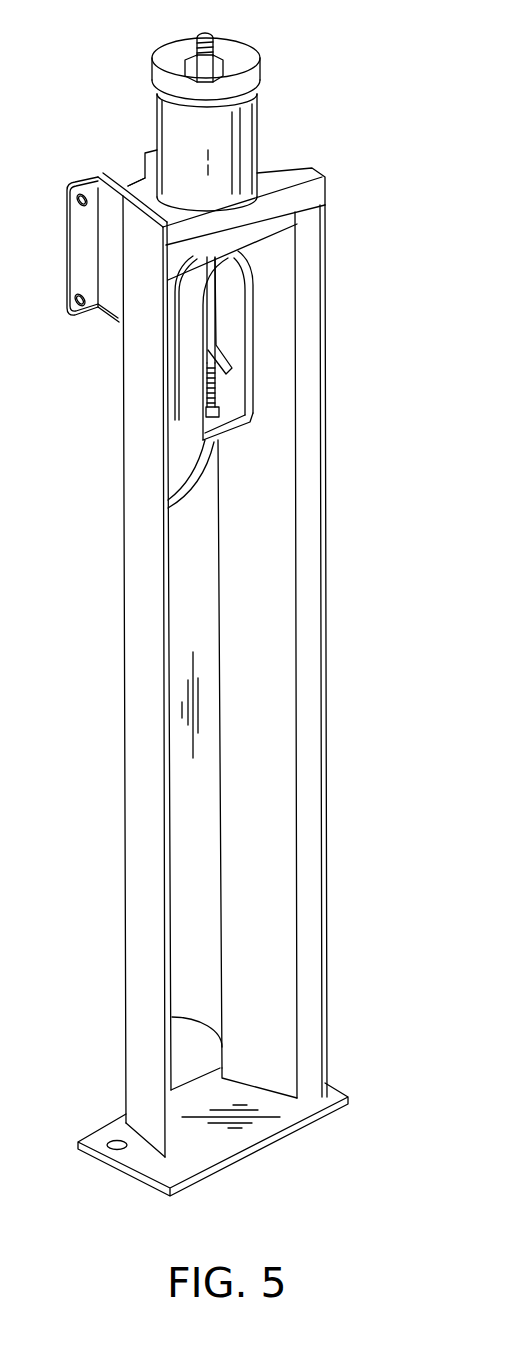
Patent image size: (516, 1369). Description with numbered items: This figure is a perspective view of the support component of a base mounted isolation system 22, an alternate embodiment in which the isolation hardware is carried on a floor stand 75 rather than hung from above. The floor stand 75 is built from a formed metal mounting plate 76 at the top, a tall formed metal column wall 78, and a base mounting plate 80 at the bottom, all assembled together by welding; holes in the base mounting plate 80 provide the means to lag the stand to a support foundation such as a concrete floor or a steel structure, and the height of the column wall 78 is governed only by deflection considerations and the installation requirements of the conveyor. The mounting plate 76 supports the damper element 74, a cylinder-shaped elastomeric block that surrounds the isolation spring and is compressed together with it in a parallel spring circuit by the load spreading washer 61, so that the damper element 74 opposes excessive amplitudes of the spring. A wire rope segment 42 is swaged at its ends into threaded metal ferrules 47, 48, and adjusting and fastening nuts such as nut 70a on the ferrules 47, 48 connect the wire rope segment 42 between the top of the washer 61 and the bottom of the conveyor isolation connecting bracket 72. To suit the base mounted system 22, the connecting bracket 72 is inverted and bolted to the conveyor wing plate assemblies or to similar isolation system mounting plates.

The base mounted isolation system 22 is at (355, 412).
The wire rope segment 42 is at (210, 307).
The threaded metal ferrule 47 is at (203, 33).
The threaded metal ferrule 48 is at (222, 393).
The load spreading washer 61 is at (160, 70).
The adjusting and fastening nut 70a is at (225, 63).
The conveyor isolation connecting bracket 72 is at (67, 258).
The damper element 74 is at (258, 133).
The floor stand 75 is at (325, 691).
The formed metal mounting plate 76 is at (328, 188).
The formed metal column wall 78 is at (324, 558).
The base mounting plate 80 is at (147, 1162).